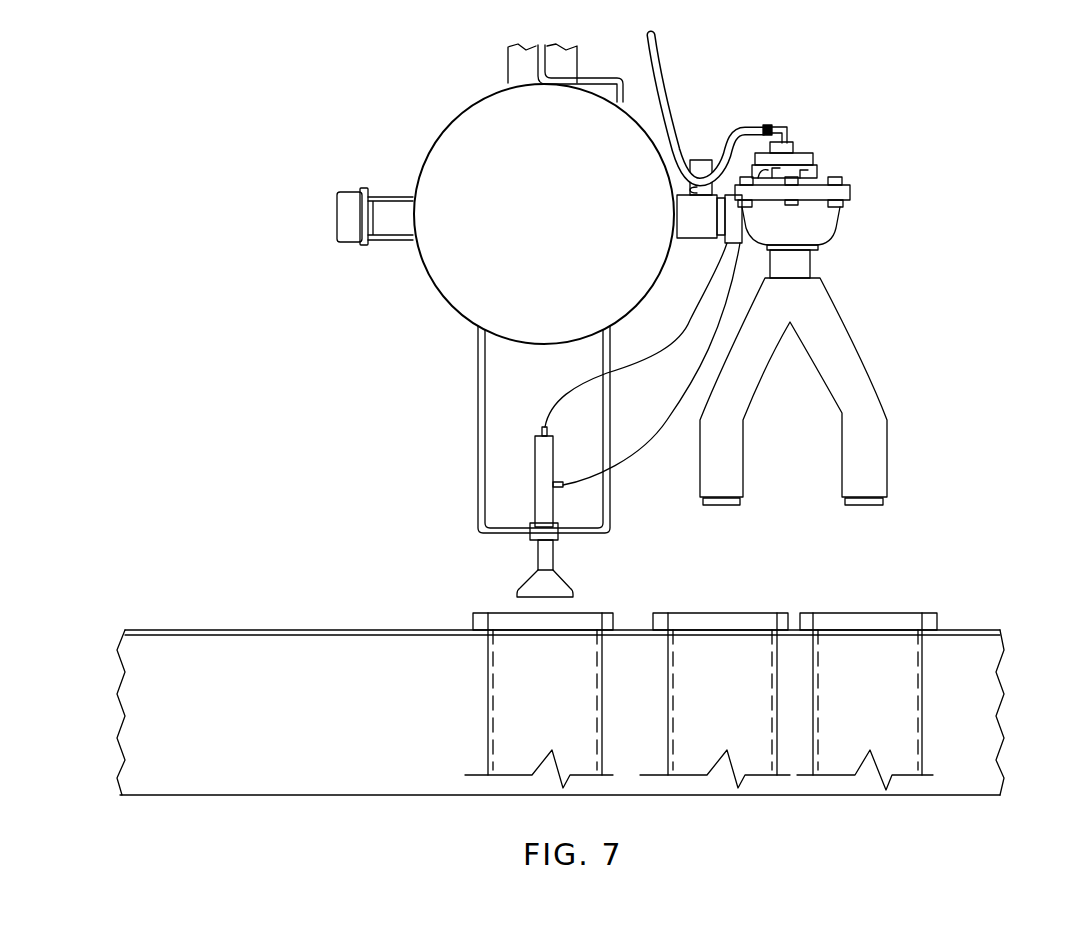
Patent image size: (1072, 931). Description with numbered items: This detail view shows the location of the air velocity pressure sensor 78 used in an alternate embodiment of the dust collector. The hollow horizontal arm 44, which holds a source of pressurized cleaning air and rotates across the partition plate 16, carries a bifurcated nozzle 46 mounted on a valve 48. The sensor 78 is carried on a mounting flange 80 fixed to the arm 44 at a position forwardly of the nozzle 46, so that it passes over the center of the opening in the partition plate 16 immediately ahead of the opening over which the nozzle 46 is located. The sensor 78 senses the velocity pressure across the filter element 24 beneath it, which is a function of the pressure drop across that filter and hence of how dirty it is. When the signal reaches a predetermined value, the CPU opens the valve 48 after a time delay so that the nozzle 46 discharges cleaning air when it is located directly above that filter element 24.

The partition plate 16 is at (270, 632).
The filter element 24 is at (903, 723).
The horizontal arm 44 is at (453, 118).
The nozzle 46 is at (847, 368).
The valve 48 is at (822, 228).
The air velocity pressure sensor 78 is at (528, 582).
The mounting flange 80 is at (478, 470).